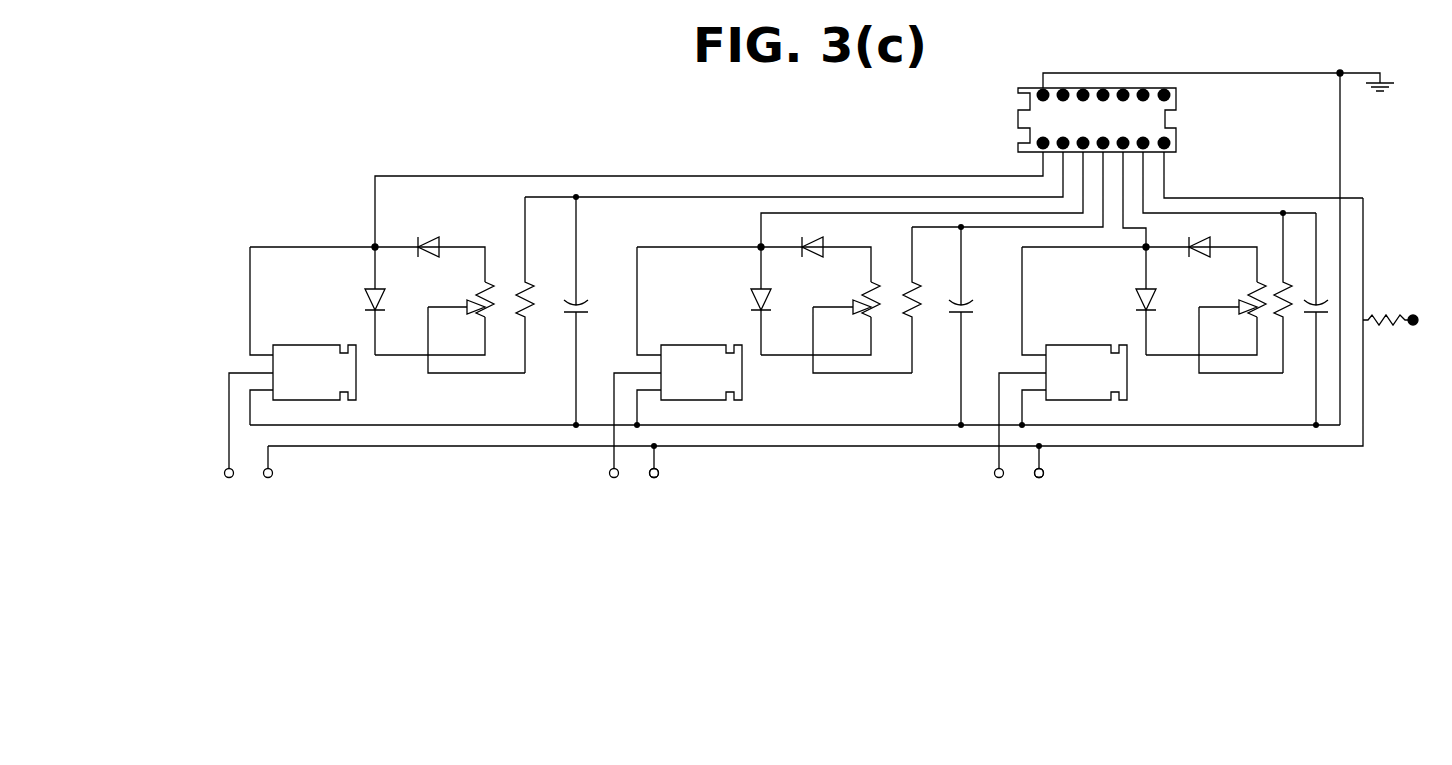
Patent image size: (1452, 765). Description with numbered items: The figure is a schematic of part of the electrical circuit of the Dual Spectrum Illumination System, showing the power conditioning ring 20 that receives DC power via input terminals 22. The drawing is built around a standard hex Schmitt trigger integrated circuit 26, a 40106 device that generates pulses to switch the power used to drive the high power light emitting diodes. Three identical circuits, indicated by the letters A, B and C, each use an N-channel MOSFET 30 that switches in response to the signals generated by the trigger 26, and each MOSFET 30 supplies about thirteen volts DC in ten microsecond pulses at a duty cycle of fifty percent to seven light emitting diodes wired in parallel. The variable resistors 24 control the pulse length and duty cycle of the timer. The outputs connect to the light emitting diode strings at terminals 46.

The power conditioning ring 20 is at (1241, 468).
The input terminals 22 is at (1418, 324).
The variable resistors 24 is at (1250, 297).
The hex Schmitt trigger integrated circuit 26 is at (1168, 110).
The N-channel MOSFETs 30 is at (356, 373).
The terminals 46 is at (659, 475).